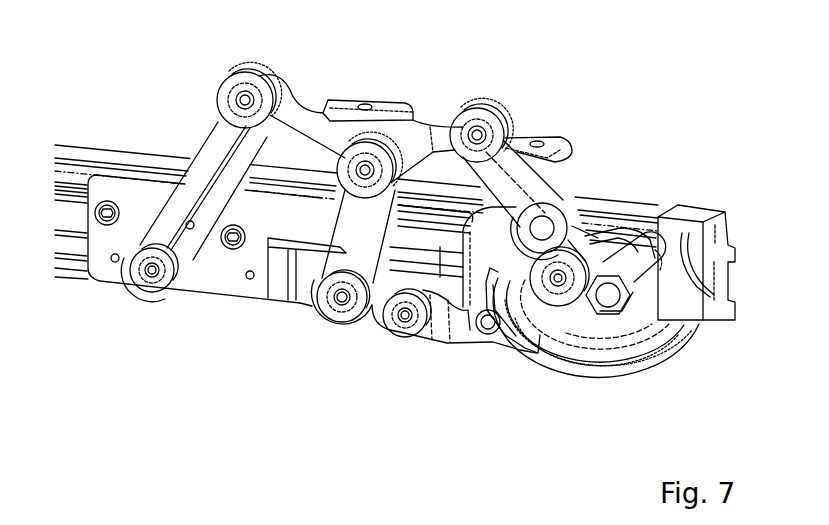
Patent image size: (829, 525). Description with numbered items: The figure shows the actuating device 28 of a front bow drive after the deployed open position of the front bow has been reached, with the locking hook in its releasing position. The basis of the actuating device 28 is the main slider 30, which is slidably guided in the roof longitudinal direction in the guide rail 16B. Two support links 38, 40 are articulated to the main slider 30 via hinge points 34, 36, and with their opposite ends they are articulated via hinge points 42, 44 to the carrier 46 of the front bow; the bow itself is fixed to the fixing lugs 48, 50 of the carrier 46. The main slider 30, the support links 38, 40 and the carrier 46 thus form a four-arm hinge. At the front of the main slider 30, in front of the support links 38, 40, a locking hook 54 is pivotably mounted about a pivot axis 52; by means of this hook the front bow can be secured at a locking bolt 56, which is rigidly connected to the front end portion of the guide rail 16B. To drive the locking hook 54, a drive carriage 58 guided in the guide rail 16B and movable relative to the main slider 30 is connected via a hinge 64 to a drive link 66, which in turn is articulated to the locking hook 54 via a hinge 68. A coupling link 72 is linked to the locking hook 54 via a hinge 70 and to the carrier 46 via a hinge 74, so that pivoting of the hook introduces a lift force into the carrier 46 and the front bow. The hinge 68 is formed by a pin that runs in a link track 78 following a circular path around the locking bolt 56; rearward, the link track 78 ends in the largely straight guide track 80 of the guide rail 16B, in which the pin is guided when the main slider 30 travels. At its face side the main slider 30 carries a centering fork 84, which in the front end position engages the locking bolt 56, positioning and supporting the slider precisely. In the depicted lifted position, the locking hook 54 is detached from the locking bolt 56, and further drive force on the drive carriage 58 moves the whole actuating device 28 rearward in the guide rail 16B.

The guide rail 16B is at (67, 145).
The actuating device 28 is at (202, 296).
The main slider 30 is at (133, 196).
The hinge point 34 is at (153, 273).
The hinge point 36 is at (340, 307).
The support link 38 is at (198, 176).
The support link 40 is at (355, 230).
The hinge point 42 is at (245, 99).
The hinge point 44 is at (366, 170).
The carrier 46 is at (305, 120).
The fixing lug 48 is at (388, 112).
The fixing lug 50 is at (527, 135).
The pivot axis 52 is at (558, 283).
The locking hook 54 is at (523, 353).
The locking bolt 56 is at (612, 293).
The drive carriage 58 is at (370, 320).
The hinge 64 is at (403, 317).
The drive link 66 is at (447, 340).
The hinge 68 is at (492, 330).
The hinge 70 is at (627, 240).
The coupling link 72 is at (517, 178).
The hinge 74 is at (477, 135).
The link track 78 is at (630, 357).
The guide track 80 is at (62, 252).
The centering fork 84 is at (660, 213).